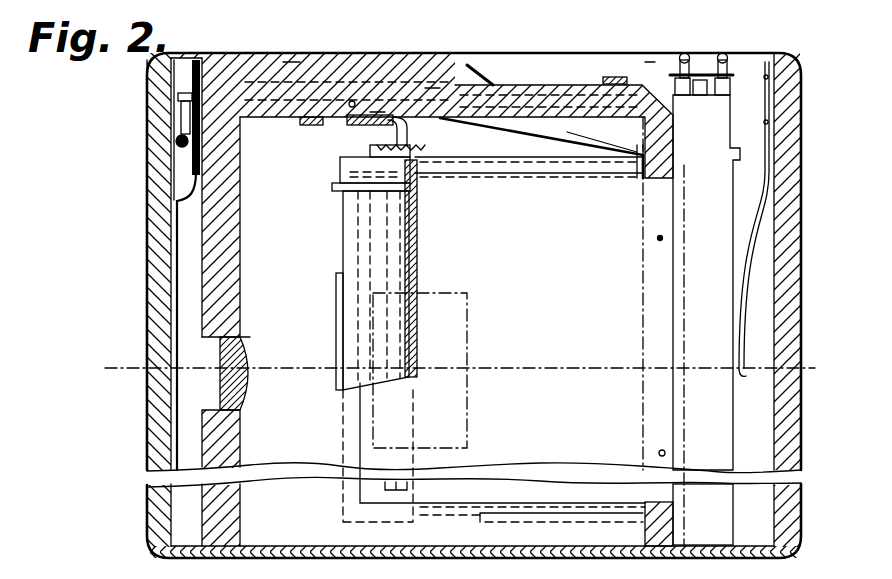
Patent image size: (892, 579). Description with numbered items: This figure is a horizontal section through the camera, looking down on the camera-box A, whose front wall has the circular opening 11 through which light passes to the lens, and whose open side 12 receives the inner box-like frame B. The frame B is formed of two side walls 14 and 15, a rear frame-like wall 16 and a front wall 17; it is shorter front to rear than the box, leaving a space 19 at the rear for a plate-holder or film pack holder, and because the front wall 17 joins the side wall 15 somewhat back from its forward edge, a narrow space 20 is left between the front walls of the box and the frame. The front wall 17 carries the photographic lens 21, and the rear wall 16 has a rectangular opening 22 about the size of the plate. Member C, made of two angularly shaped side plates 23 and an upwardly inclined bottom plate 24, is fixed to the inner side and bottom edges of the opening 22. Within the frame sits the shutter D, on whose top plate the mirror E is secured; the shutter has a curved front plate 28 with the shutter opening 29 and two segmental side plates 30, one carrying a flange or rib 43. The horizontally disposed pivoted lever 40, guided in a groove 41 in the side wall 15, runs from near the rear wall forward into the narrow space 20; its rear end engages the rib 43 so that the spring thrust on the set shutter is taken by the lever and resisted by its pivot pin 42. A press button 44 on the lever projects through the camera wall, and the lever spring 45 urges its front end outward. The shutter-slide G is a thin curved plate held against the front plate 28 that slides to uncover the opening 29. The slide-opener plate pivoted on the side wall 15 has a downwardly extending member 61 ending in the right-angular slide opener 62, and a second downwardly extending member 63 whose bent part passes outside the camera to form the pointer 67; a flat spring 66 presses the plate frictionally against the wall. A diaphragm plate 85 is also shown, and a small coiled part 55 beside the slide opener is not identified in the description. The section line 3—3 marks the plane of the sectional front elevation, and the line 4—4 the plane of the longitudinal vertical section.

The section line 3— 3 is at (168, 53).
The press button 44 is at (283, 62).
The pivot pin 42 is at (352, 100).
The side wall 15 is at (378, 112).
The downwardly extending member 61 is at (432, 88).
The groove 41 is at (483, 48).
The inner box-like frame B is at (522, 80).
The pointer 67 is at (605, 77).
The open side 12 is at (644, 64).
The space 19 is at (747, 60).
The lever spring 45 is at (187, 117).
The camera-box A is at (147, 143).
The diaphragm plate 85 is at (176, 188).
The front wall 17 is at (240, 207).
The narrow space 20 is at (187, 232).
The circular opening 11 is at (153, 337).
The photographic lens 21 is at (240, 348).
The section line 4— 4 is at (447, 362).
The flat spring 66 is at (303, 123).
The slide opener 62 is at (347, 123).
The contact spring 55 is at (412, 129).
The pivoted lever 40 is at (520, 122).
The second downwardly extending member 63 is at (541, 148).
The rear frame-like wall 16 is at (670, 137).
The segmental side plates 30 is at (476, 176).
The angularly shaped side plates 23 is at (493, 176).
The flange or rib 43 is at (617, 155).
The light shield C is at (610, 178).
The curved front plate 28 is at (418, 230).
The shutter opening 29 is at (453, 330).
The upwardly inclined bottom plate 24 is at (583, 289).
The rectangular opening 22 is at (635, 293).
The side wall 14 is at (474, 527).
The shutter D is at (343, 233).
The mirror E is at (407, 243).
The shutter-slide G is at (340, 157).